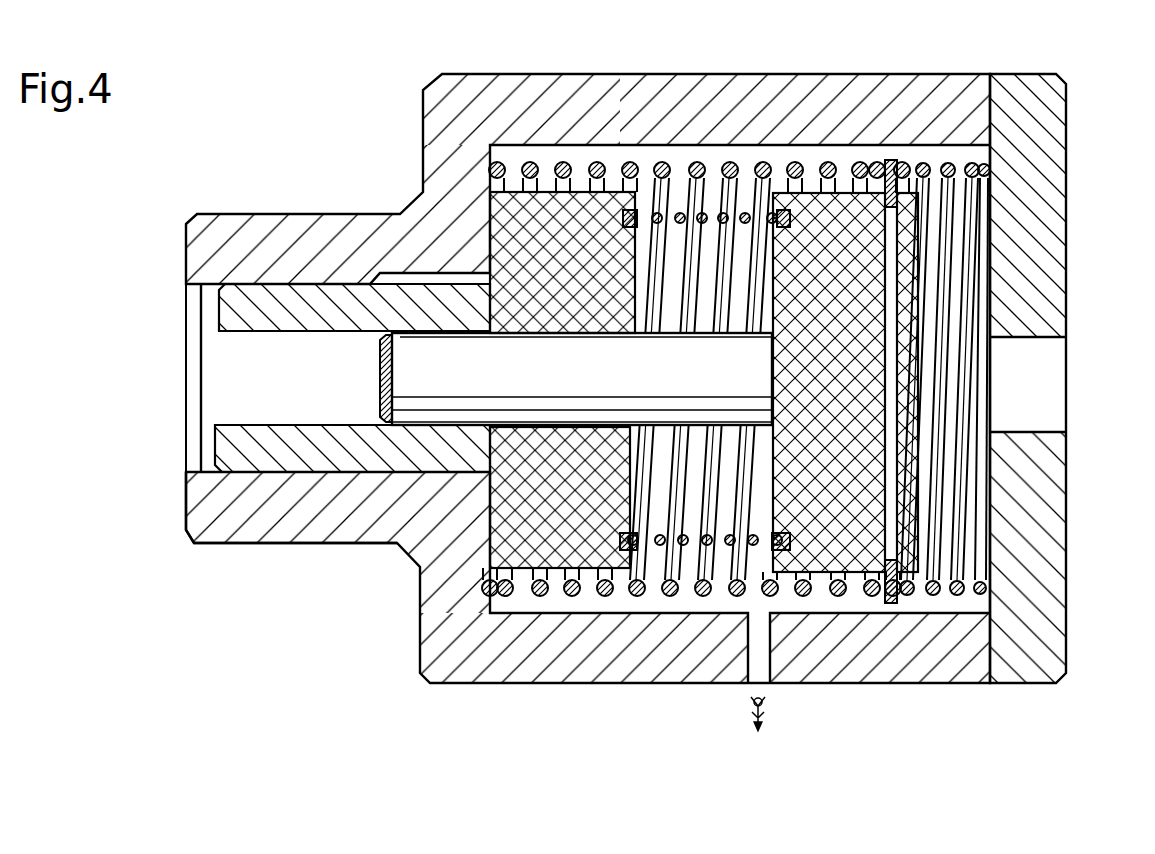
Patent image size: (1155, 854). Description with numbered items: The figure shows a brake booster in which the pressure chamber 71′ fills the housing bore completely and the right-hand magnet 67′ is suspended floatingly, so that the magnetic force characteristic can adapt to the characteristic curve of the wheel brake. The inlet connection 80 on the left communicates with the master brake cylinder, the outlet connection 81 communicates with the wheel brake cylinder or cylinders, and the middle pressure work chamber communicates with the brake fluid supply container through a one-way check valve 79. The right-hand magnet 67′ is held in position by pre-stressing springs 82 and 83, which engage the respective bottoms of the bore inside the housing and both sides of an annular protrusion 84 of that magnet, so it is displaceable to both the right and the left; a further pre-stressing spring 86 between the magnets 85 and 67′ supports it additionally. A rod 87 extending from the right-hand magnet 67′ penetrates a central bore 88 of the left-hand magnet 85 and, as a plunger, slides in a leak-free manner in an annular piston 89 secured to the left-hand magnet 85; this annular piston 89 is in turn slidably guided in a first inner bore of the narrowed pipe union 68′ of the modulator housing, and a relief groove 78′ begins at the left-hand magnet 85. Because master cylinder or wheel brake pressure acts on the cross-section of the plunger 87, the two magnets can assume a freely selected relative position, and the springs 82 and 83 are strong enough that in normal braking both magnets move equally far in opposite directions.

The right-hand magnet 67′ is at (853, 555).
The narrowed pipe union 68′ is at (222, 525).
The pressure chamber 71′ is at (653, 560).
The relief groove 78′ is at (402, 262).
The one-way check valve 79 is at (765, 705).
The inlet connection 80 is at (212, 465).
The outlet connection 81 is at (1033, 432).
The pre-stressing spring 82 is at (938, 573).
The pre-stressing spring 83 is at (525, 583).
The annular protrusion 84 is at (897, 160).
The left-hand magnet 85 is at (417, 612).
The further pre-stressing spring 86 is at (692, 560).
The rod 87 is at (403, 358).
The central bore 88 is at (360, 423).
The annular piston 89 is at (312, 460).